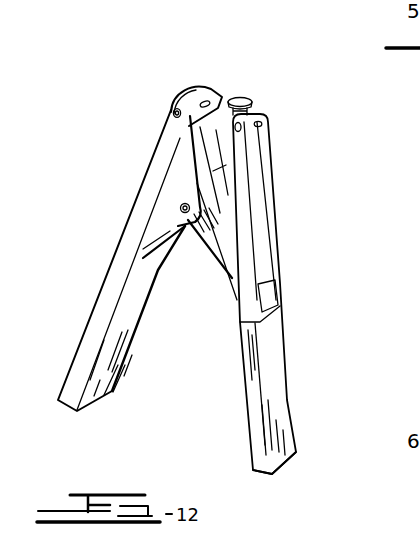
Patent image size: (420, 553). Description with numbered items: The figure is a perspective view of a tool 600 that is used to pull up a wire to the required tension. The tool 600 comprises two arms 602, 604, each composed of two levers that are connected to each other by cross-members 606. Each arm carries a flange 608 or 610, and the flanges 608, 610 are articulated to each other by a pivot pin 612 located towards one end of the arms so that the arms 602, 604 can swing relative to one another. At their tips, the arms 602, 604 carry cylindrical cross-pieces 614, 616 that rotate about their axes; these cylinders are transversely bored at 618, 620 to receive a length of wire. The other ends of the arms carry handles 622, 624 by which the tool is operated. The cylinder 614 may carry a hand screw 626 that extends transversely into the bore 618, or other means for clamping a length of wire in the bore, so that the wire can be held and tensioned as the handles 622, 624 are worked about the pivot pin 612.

The tool 600 is at (133, 199).
The arm 602 is at (262, 247).
The arm 604 is at (168, 148).
The cross-member 606 is at (267, 293).
The flange 608 is at (227, 257).
The flange 610 is at (172, 217).
The pivot pin 612 is at (133, 171).
The cylindrical cross-piece 614 is at (249, 113).
The cylindrical cross-piece 616 is at (193, 94).
The bore 618 is at (261, 127).
The bore 620 is at (211, 100).
The handle 622 is at (282, 413).
The handle 624 is at (115, 356).
The hand screw 626 is at (252, 99).